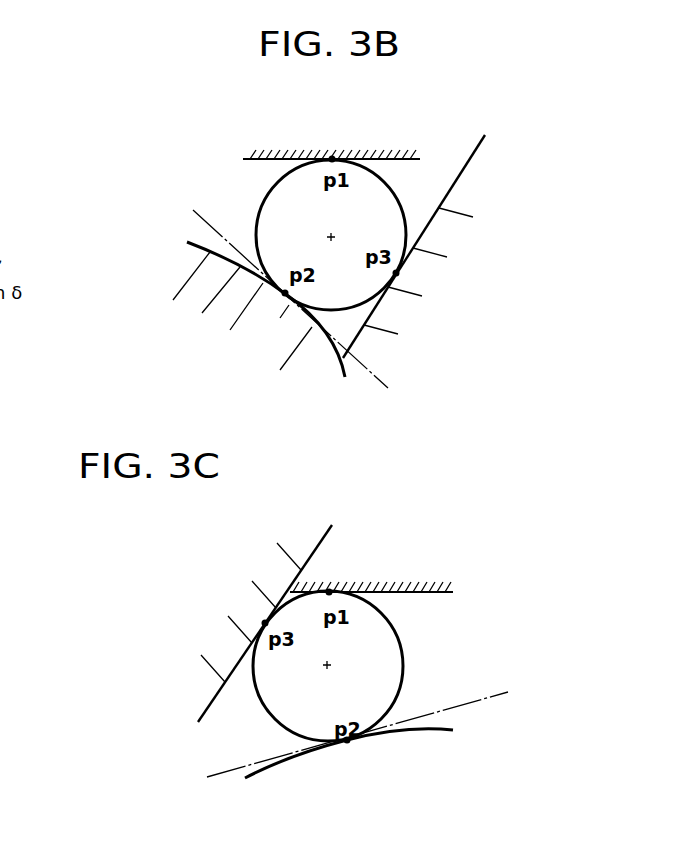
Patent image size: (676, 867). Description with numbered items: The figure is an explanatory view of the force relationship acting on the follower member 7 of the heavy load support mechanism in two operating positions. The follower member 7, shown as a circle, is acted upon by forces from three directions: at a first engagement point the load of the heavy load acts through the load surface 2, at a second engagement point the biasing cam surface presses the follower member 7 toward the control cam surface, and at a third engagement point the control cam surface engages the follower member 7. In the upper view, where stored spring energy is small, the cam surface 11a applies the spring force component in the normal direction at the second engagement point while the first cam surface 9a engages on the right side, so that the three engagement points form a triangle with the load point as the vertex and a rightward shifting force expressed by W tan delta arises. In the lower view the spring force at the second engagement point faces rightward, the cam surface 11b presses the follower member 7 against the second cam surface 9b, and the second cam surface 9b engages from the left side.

In FIG. 3B, the load surface 2 is at (402, 171).
In FIG. 3C, the load surface 2 is at (424, 594).
In FIG. 3B, the follower member 7 is at (287, 222).
In FIG. 3C, the follower member 7 is at (387, 648).
In FIG. 3B, the first cam surface 9a is at (444, 177).
In FIG. 3C, the second cam surface 9b is at (222, 700).
In FIG. 3B, the cam surface 11a is at (215, 238).
In FIG. 3C, the cam surface 11b is at (435, 730).